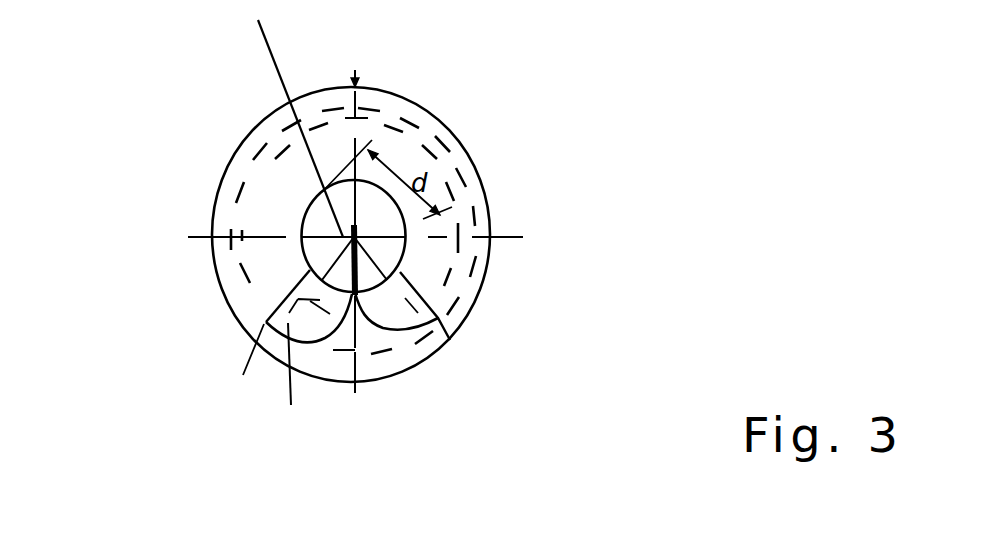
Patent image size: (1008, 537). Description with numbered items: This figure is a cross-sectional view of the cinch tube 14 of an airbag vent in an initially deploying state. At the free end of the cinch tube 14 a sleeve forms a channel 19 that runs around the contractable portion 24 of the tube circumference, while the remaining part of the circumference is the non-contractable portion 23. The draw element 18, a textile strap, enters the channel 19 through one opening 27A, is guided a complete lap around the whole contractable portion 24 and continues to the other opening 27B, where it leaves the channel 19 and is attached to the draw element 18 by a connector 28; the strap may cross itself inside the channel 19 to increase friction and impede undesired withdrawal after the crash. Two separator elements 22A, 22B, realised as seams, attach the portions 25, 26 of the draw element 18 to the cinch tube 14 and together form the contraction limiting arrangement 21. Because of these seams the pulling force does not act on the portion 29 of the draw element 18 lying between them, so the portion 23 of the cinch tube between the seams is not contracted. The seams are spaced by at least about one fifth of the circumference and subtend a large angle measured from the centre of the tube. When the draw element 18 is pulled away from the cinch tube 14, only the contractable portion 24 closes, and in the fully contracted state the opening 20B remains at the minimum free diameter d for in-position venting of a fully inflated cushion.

The cinch tube 14 is at (478, 153).
The draw element 18 is at (273, 67).
The channel 19 is at (233, 170).
The opening 20B is at (354, 237).
The contraction limiting arrangement 21 is at (530, 355).
The separator element 22A is at (295, 388).
The separator element 22B is at (449, 364).
The non-contractable portion 23 is at (378, 368).
The contractable portion 24 is at (383, 100).
The portion of the draw element 25 is at (257, 147).
The portion of the draw element 26 is at (402, 268).
The opening of the channel 27A is at (258, 308).
The opening of the channel 27B is at (440, 320).
The connector 28 is at (357, 241).
The portion of the draw element between the seams 29 is at (345, 352).